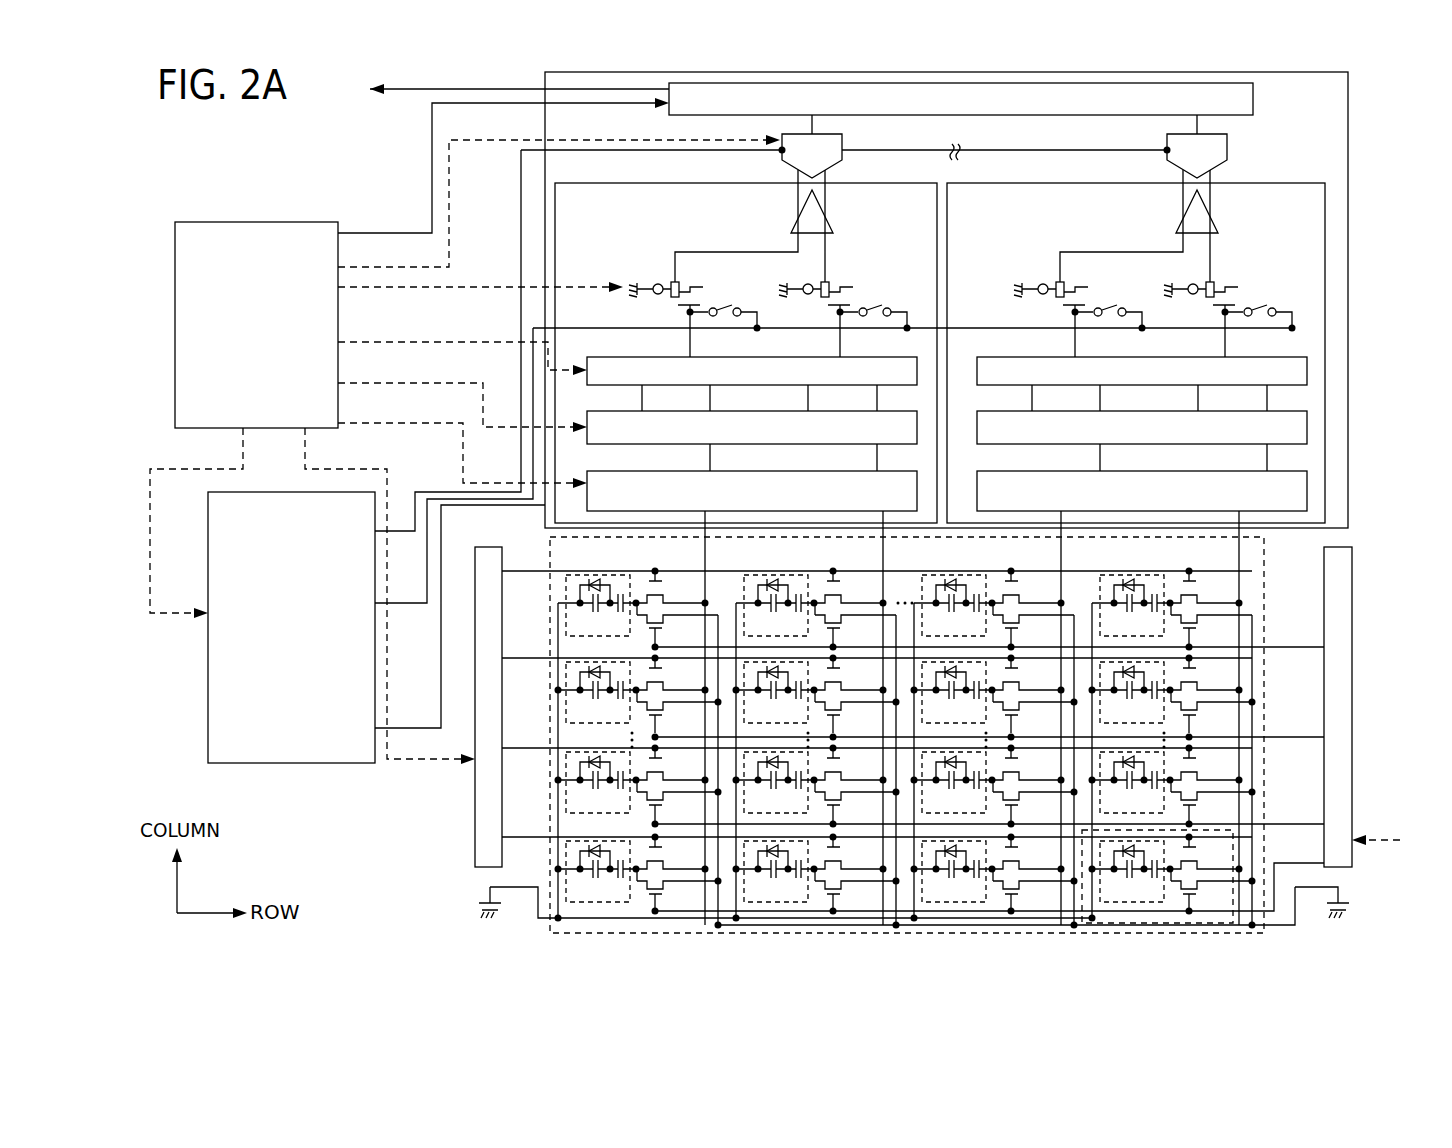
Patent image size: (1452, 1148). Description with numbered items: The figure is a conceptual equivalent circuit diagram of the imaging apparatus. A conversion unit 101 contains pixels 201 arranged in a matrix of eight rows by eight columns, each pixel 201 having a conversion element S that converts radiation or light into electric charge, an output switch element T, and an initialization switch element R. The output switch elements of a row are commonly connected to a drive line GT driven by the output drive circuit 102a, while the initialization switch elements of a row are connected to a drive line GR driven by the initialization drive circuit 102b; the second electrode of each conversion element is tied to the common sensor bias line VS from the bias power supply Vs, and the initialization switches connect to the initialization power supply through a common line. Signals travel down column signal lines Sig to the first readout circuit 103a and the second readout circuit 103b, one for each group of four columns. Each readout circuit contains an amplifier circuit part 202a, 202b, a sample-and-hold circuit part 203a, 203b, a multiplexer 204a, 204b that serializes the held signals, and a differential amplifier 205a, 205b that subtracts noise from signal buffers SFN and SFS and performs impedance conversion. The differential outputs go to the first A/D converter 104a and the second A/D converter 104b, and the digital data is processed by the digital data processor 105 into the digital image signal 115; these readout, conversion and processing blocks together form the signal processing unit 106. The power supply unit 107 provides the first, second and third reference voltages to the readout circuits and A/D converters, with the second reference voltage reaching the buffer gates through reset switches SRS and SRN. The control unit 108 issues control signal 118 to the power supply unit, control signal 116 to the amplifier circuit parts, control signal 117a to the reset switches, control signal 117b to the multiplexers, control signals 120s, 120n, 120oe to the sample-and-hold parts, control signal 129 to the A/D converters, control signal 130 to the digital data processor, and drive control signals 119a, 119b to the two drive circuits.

The conversion unit 101 is at (1266, 560).
The output drive circuit 102a is at (475, 839).
The initialization drive circuit 102b is at (1352, 608).
The first readout circuit 103a is at (662, 180).
The second readout circuit 103b is at (1051, 180).
The first A/D converter 104a is at (768, 138).
The second A/D converter 104b is at (1165, 140).
The digital data processor 105 is at (1253, 92).
The signal processing unit 106 is at (545, 74).
The power supply unit 107 is at (208, 717).
The control unit 108 is at (222, 222).
The digital image signal 115 is at (499, 90).
The control signal 116 is at (422, 420).
The control signal 117a is at (494, 284).
The control signal 117b is at (422, 339).
The control signal 118 is at (240, 452).
The drive control signal 119a is at (310, 452).
The drive control signal 119b is at (1388, 820).
The control signal 120s is at (462, 394).
The control signal 120n is at (462, 394).
The control signal 120oe is at (460, 381).
The control signal 129 is at (414, 264).
The control signal 130 is at (414, 230).
The pixel 201 is at (1236, 876).
The first amplifier circuit part 202a is at (632, 470).
The second amplifier circuit part 202b is at (1029, 470).
The first sample-and-hold circuit part 203a is at (632, 412).
The second sample-and-hold circuit part 203b is at (1029, 412).
The first multiplexer 204a is at (632, 356).
The second multiplexer 204b is at (1029, 356).
The first differential amplifier 205a is at (871, 230).
The second differential amplifier 205b is at (1256, 230).